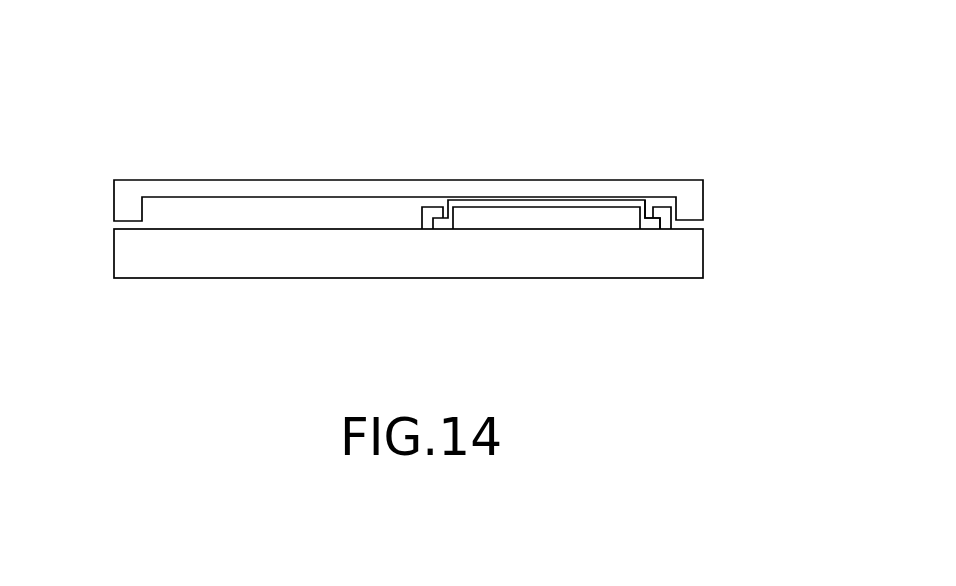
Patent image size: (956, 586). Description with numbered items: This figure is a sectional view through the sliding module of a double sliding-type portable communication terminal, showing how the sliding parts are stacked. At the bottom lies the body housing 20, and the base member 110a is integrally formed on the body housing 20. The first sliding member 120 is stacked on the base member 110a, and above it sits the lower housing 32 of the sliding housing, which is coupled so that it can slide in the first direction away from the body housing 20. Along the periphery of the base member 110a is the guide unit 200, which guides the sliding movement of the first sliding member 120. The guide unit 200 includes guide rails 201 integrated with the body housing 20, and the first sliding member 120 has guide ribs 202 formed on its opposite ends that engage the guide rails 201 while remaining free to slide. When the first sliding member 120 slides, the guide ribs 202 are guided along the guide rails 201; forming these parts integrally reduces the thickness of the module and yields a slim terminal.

The lower housing 32 is at (290, 187).
The body housing 20 is at (289, 258).
The base member 110a is at (508, 225).
The first sliding member 120 is at (558, 205).
The guide unit 200 is at (704, 128).
The guide rail 201 is at (667, 208).
The guide rib 202 is at (653, 216).